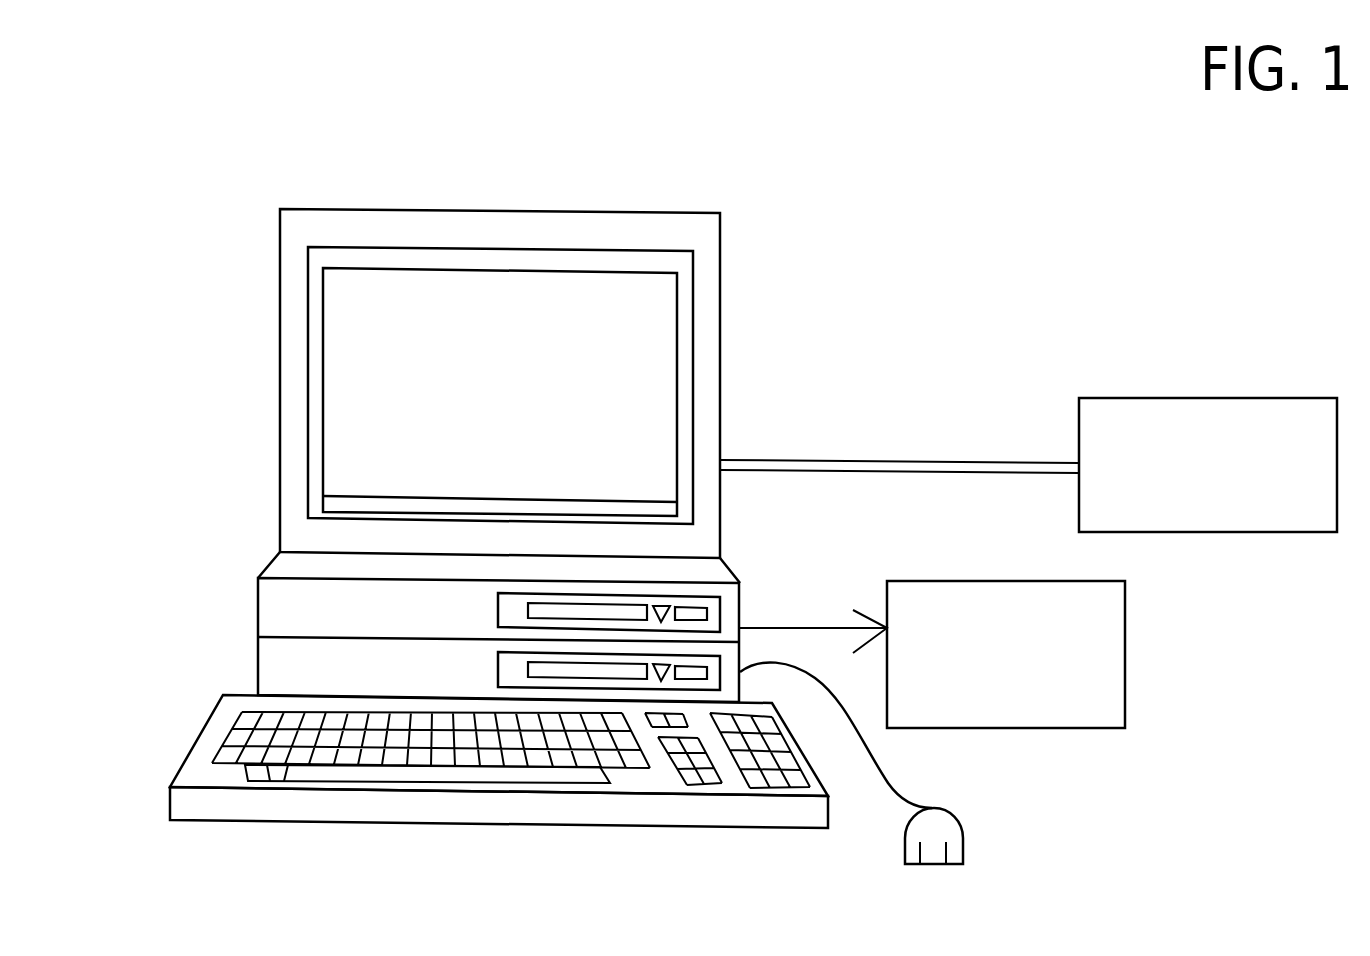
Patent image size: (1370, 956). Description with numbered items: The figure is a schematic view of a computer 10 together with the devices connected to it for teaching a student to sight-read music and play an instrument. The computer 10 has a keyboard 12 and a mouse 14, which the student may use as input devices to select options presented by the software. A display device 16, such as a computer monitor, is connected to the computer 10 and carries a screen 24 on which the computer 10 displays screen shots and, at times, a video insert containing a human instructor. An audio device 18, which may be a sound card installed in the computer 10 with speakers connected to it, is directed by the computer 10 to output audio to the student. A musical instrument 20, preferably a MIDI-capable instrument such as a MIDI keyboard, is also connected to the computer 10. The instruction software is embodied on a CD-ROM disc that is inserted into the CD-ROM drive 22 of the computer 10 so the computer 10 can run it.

The computer 10 is at (210, 661).
The keyboard 12 is at (190, 803).
The mouse 14 is at (933, 827).
The display device 16 is at (278, 320).
The audio device 18 is at (1125, 690).
The musical instrument 20 is at (1245, 532).
The CD-ROM drive 22 is at (714, 614).
The screen 24 is at (533, 292).